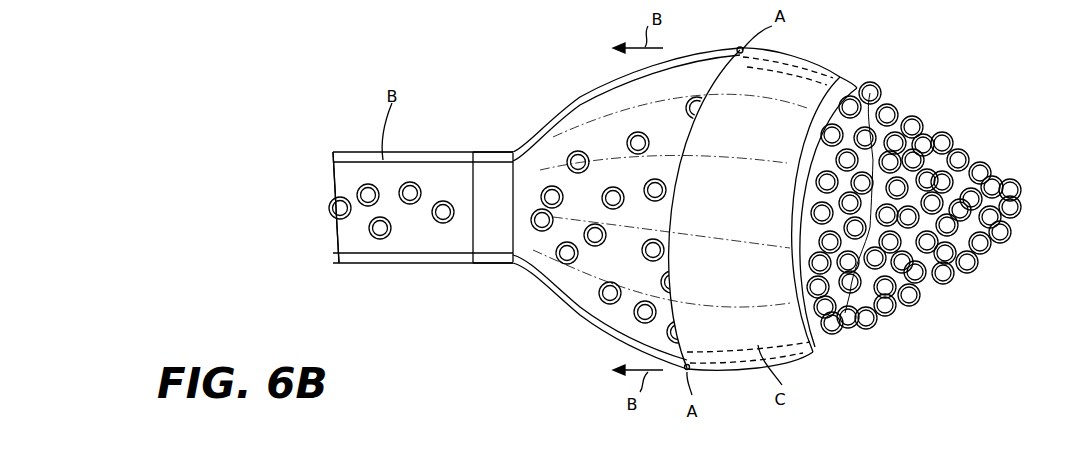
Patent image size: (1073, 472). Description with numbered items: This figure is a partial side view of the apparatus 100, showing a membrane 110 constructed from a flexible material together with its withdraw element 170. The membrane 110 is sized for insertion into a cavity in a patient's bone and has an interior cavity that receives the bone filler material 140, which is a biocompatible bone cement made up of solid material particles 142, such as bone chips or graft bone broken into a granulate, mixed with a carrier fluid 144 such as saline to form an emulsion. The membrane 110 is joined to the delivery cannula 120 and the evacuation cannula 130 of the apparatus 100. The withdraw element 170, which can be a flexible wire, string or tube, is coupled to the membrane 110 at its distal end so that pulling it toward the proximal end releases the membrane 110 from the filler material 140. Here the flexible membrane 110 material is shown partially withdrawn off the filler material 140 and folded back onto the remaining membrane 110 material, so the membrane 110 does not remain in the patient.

The apparatus 100 is at (836, 68).
The membrane 110 is at (609, 90).
The delivery cannula 120 is at (338, 150).
The evacuation cannula 130 is at (437, 265).
The bone filler material 140 is at (402, 238).
The solid material particles 142 is at (330, 212).
The carrier fluid 144 is at (332, 245).
The withdraw element 170 is at (688, 52).